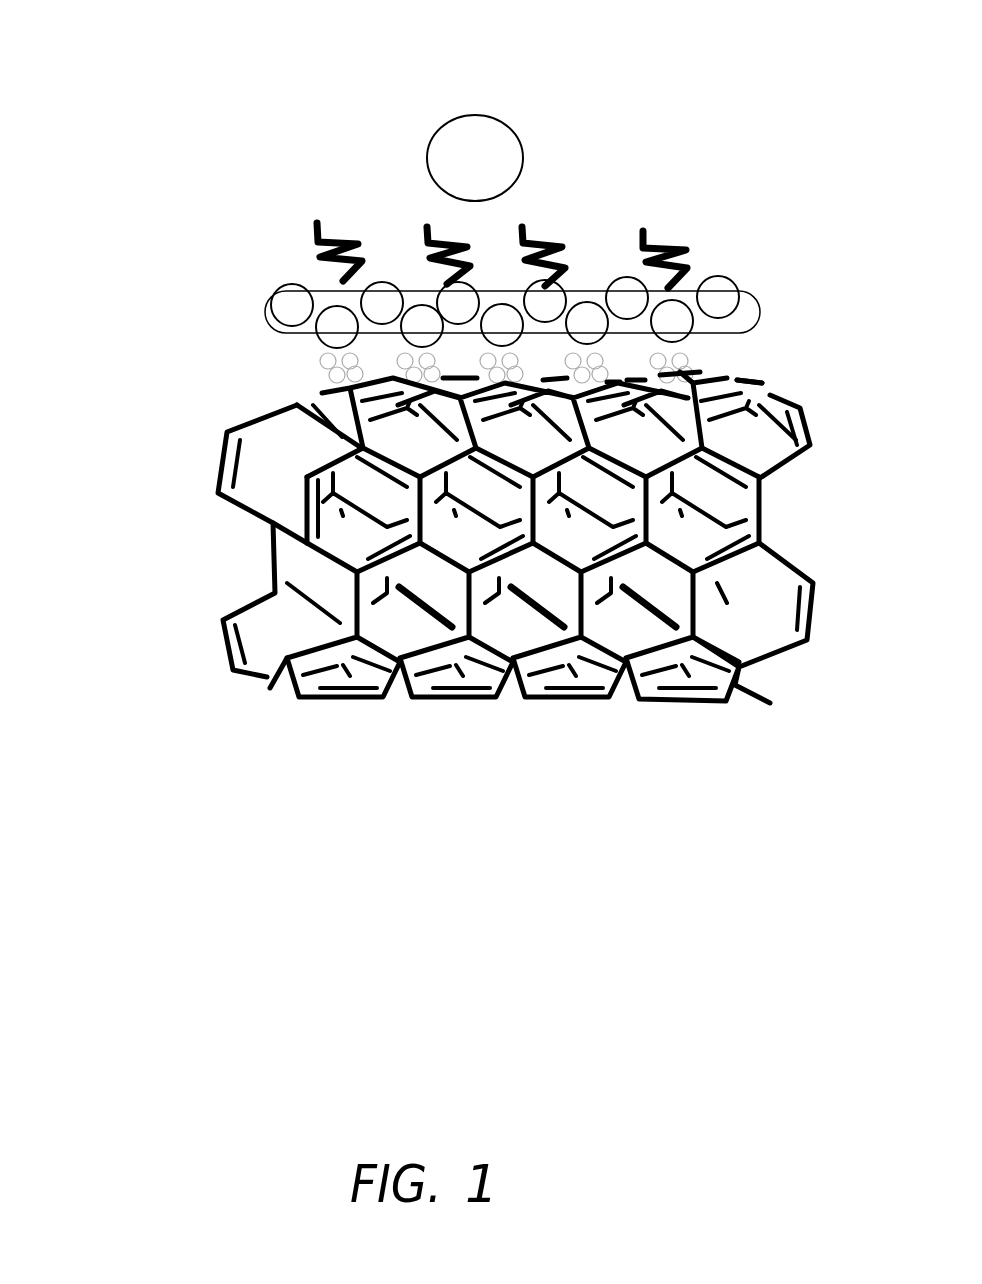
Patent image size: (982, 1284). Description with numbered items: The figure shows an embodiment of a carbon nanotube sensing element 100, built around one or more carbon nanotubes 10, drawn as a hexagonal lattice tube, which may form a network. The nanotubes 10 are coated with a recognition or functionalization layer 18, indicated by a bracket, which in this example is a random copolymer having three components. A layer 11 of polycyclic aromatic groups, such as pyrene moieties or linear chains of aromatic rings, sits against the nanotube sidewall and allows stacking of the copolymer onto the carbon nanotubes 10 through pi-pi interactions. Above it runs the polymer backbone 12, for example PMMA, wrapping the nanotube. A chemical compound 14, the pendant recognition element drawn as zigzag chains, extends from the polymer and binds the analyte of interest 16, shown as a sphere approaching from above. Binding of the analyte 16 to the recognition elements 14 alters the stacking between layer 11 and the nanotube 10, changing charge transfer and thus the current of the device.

The carbon nanotube sensing element 100 is at (120, 101).
The carbon nanotube 10 is at (250, 576).
The layer 11 is at (292, 383).
The polymer backbone 12 is at (231, 335).
The chemical compound 14 is at (248, 267).
The analyte of interest 16 is at (392, 167).
The recognition or functionalization layer 18 is at (775, 367).